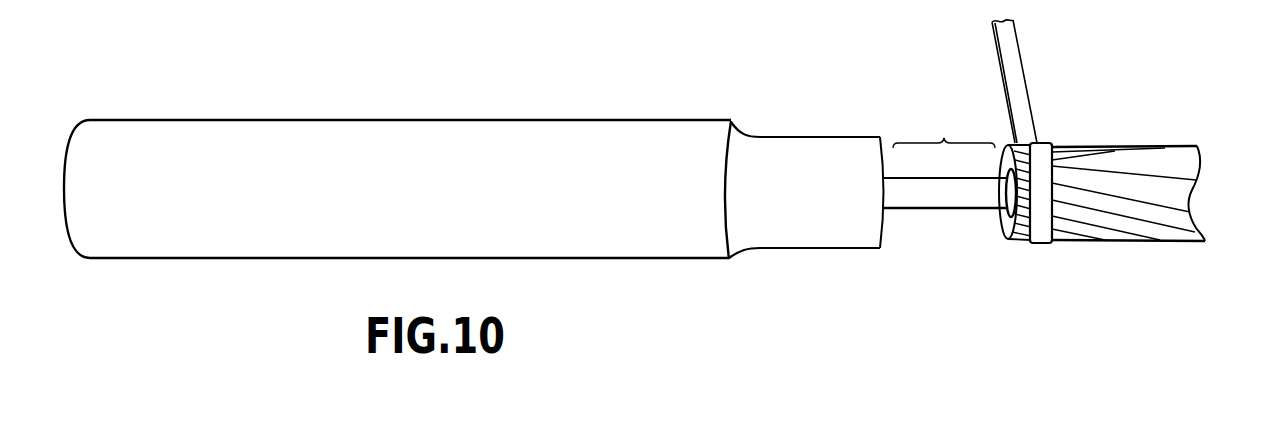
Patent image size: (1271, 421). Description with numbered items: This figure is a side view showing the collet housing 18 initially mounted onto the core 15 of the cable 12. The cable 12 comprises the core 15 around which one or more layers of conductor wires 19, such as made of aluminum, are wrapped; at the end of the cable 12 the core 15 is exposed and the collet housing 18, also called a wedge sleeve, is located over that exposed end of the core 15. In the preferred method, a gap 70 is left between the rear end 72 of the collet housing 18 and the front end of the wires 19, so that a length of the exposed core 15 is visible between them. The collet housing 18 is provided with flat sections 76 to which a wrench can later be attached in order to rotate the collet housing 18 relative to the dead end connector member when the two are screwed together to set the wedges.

The cable 12 is at (1167, 201).
The core 15 is at (952, 209).
The collet housing 18 is at (202, 262).
The conductor wires 19 is at (1005, 237).
The gap 70 is at (943, 138).
The rear end of the collet housing 72 is at (882, 249).
The flat sections 76 is at (793, 136).